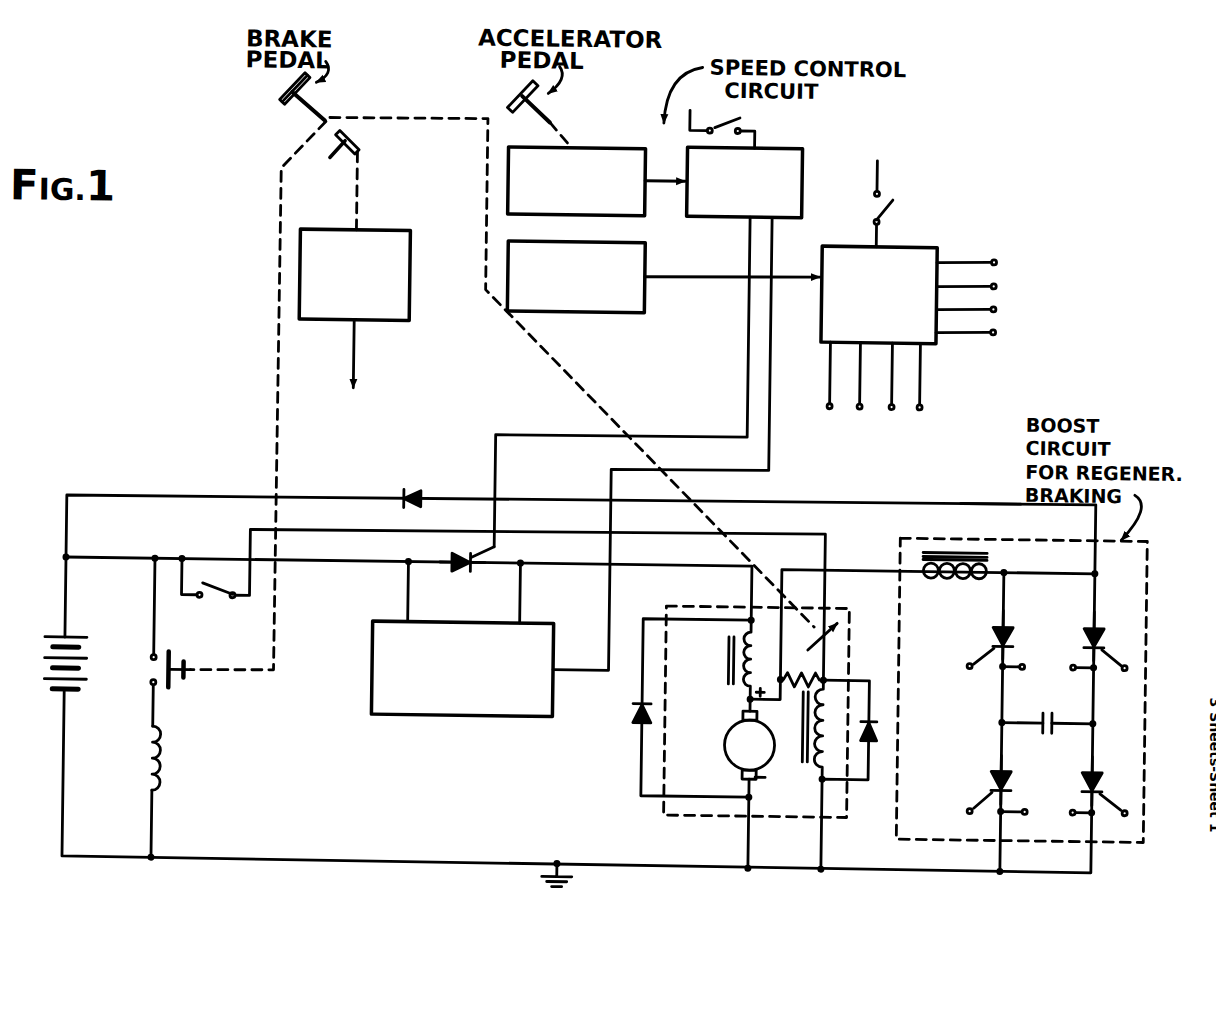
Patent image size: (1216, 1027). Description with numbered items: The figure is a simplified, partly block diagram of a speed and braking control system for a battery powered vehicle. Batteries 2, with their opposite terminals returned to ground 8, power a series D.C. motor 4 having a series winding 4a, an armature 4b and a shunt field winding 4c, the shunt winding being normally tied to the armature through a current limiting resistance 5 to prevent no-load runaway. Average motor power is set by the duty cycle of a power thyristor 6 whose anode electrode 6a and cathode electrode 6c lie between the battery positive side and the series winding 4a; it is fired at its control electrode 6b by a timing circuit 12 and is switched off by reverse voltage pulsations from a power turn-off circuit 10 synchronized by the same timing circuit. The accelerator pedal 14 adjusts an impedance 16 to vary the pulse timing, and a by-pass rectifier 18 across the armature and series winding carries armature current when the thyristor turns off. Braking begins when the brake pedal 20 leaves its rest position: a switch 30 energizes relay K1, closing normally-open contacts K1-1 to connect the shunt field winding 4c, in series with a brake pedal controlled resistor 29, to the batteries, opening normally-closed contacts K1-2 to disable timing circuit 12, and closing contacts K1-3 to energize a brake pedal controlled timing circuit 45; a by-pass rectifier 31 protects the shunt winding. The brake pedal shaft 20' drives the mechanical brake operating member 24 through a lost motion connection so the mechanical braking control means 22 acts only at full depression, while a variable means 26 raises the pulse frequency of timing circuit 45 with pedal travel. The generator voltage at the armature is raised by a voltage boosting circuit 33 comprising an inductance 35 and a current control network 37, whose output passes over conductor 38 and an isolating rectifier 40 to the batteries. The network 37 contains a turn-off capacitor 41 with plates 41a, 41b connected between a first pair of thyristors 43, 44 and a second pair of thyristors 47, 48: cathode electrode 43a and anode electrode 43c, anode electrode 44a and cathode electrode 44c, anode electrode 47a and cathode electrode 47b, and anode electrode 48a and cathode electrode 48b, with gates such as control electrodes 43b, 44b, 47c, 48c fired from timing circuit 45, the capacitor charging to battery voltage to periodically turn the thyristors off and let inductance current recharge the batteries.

The batteries 2 is at (42, 670).
The motor 4 is at (834, 591).
The series winding 4a is at (755, 654).
The armature 4b is at (725, 741).
The field winding 4c is at (827, 693).
The current limiting resistance 5 is at (794, 678).
The power thyristor 6 is at (433, 547).
The anode electrode 6a is at (454, 565).
The control electrode 6b is at (478, 548).
The cathode electrode 6c is at (478, 566).
The ground 8 is at (552, 864).
The power turn-off circuit 10 is at (427, 710).
The timing circuit 12 is at (697, 208).
The accelerator pedal 14 is at (504, 95).
The impedance 16 is at (592, 141).
The by-pass rectifier 18 is at (637, 712).
The brake pedal 20 is at (265, 108).
The brake pedal shaft 20' is at (269, 110).
The mechanical braking control means 22 is at (406, 289).
The mechanical brake operating member 24 is at (324, 154).
The variable means 26 is at (566, 305).
The brake pedal controlled resistor 29 is at (861, 614).
The switch 30 is at (175, 686).
The by-pass rectifier 31 is at (868, 734).
The voltage boosting circuit 33 is at (962, 527).
The inductance 35 is at (943, 538).
The current control network 37 is at (1049, 546).
The conductor 38 is at (988, 492).
The isolating rectifier 40 is at (410, 485).
The turn-off capacitor 41 is at (1049, 725).
The capacitor plate 41a is at (1044, 714).
The capacitor plate 41b is at (1081, 693).
The thyristor 43 is at (988, 611).
The cathode electrode 43a is at (1055, 593).
The control electrode 43b is at (990, 636).
The anode electrode 43c is at (1058, 634).
The thyristor 44 is at (1087, 757).
The anode electrode 44a is at (1146, 742).
The control electrode 44b is at (1153, 780).
The cathode electrode 44c is at (1083, 776).
The timing circuit 45 is at (843, 236).
The thyristor 47 is at (1128, 607).
The anode electrode 47a is at (1143, 589).
The cathode electrode 47b is at (1142, 646).
The gate of SCR 47 47c is at (1089, 631).
The thyristor 48 is at (985, 757).
The anode electrode 48a is at (1008, 746).
The cathode electrode 48b is at (993, 780).
The gate of SCR 48 48c is at (1061, 768).
The relay K1 is at (146, 751).
The normally-open contacts K1-1 is at (208, 581).
The normally-closed contacts K1-2 is at (724, 111).
The normally-open contacts K1-3 is at (888, 192).